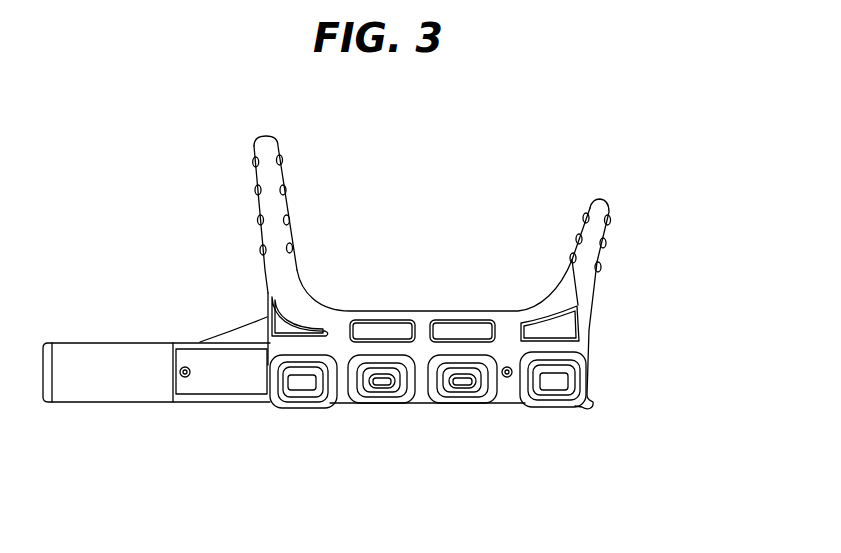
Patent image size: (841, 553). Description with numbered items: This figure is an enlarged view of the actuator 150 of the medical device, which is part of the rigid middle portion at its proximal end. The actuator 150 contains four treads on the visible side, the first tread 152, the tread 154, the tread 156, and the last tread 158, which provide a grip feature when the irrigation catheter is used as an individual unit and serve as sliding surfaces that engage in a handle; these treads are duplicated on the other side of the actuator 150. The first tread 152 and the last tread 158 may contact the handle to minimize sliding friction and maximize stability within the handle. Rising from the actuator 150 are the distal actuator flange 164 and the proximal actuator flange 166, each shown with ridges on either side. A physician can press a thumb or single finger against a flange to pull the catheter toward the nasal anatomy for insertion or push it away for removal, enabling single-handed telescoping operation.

The actuator 150 is at (485, 204).
The first tread 152 is at (297, 407).
The tread 154 is at (372, 401).
The tread 156 is at (474, 401).
The last tread 158 is at (560, 403).
The distal actuator flange 164 is at (281, 175).
The proximal actuator flange 166 is at (608, 233).